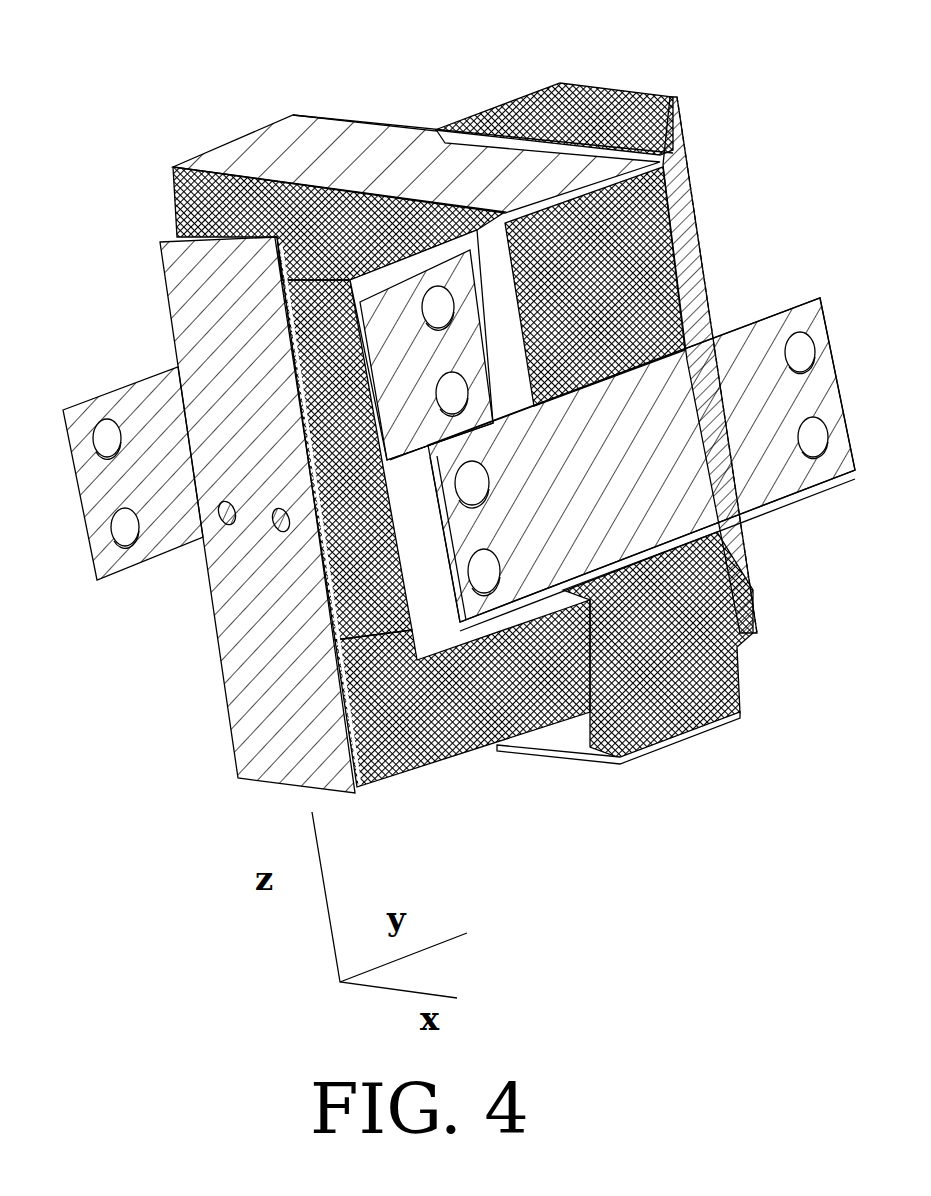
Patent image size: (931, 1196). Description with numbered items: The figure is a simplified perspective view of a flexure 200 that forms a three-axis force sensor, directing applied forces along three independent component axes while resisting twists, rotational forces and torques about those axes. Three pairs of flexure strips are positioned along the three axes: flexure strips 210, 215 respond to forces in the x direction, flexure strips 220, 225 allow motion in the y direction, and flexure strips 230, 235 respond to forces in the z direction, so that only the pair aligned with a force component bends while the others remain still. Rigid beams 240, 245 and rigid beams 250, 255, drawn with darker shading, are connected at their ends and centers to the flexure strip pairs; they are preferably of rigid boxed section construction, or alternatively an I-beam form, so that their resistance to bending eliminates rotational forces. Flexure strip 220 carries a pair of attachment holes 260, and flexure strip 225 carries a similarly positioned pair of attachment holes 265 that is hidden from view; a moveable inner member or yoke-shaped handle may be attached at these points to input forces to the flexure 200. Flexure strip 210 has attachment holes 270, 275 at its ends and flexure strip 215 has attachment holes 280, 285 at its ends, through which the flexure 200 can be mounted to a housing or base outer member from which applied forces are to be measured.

The flexure 200 is at (460, 412).
The flexure strip 210 is at (730, 517).
The flexure strip 215 is at (142, 371).
The flexure strip 220 is at (243, 658).
The flexure strip 225 is at (714, 273).
The flexure strip 230 is at (349, 125).
The flexure strip 235 is at (540, 752).
The rigid beam 240 is at (425, 782).
The rigid beam 245 is at (520, 82).
The rigid beam 250 is at (692, 732).
The rigid beam 255 is at (276, 334).
The attachment holes 260 is at (270, 477).
The attachment holes 265 is at (704, 226).
The attachment holes 270 is at (484, 539).
The attachment holes 275 is at (792, 395).
The attachment holes 280 is at (152, 497).
The attachment holes 285 is at (421, 345).